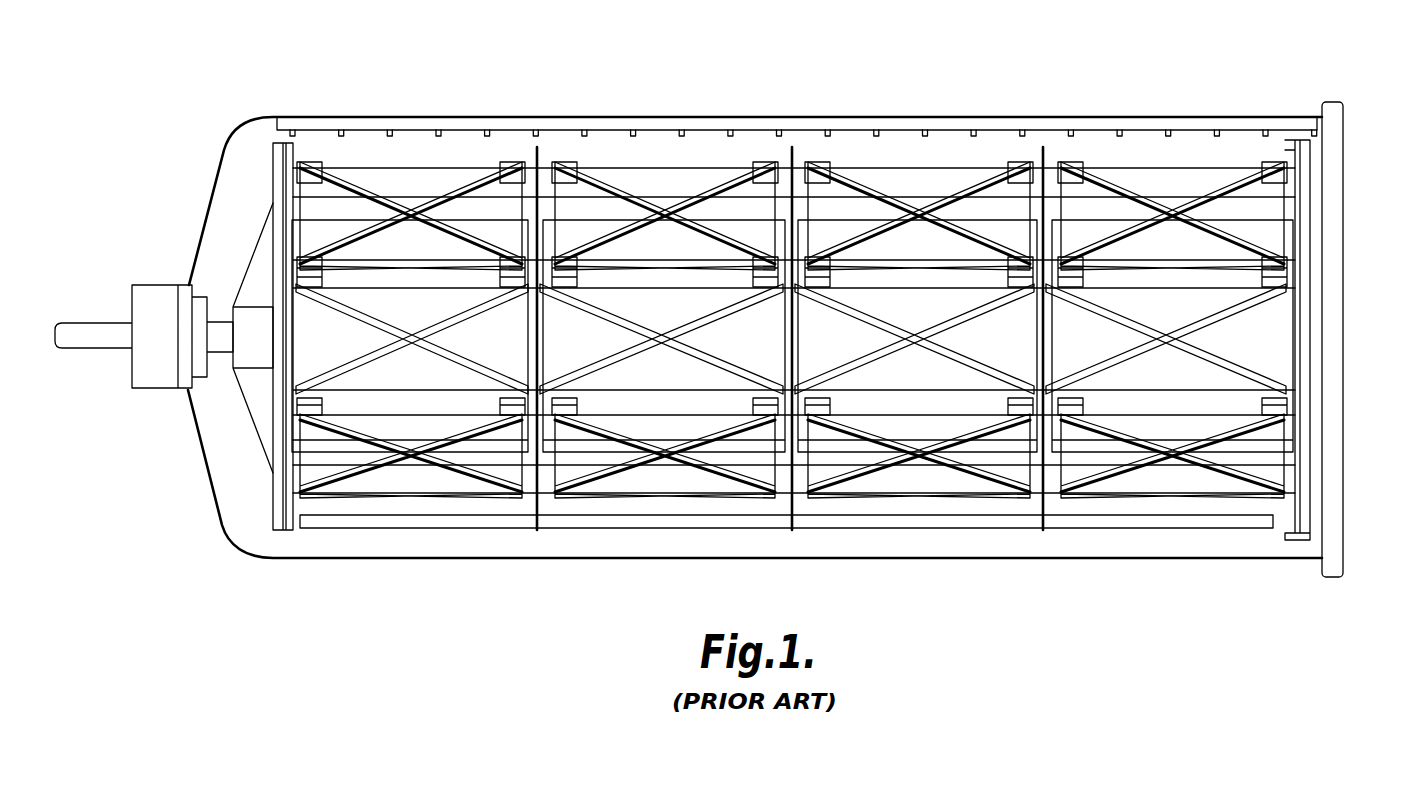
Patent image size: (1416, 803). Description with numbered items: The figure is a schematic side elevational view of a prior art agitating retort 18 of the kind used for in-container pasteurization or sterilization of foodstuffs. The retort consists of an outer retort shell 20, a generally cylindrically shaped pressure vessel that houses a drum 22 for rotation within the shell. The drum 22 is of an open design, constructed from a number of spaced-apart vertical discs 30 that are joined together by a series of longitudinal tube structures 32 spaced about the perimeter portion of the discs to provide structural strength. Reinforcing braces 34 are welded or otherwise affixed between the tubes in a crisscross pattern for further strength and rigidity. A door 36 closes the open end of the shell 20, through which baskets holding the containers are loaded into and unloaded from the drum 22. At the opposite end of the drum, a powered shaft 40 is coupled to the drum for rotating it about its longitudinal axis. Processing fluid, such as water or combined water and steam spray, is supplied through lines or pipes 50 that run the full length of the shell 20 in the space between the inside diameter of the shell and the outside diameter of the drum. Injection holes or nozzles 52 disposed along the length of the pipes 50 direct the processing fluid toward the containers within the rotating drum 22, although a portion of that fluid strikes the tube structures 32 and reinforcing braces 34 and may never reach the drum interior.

The agitating retort 18 is at (343, 67).
The outer retort shell 20 is at (220, 160).
The drum 22 is at (250, 237).
The vertical discs 30 is at (537, 150).
The longitudinal tube structures 32 is at (663, 177).
The reinforcing braces 34 is at (720, 183).
The door 36 is at (1347, 160).
The powered shaft 40 is at (98, 330).
The lines or pipes 50 is at (293, 120).
The injection holes or nozzles 52 is at (327, 130).